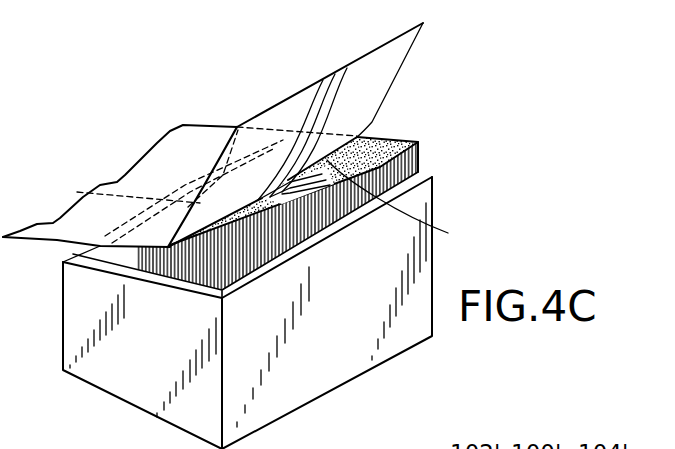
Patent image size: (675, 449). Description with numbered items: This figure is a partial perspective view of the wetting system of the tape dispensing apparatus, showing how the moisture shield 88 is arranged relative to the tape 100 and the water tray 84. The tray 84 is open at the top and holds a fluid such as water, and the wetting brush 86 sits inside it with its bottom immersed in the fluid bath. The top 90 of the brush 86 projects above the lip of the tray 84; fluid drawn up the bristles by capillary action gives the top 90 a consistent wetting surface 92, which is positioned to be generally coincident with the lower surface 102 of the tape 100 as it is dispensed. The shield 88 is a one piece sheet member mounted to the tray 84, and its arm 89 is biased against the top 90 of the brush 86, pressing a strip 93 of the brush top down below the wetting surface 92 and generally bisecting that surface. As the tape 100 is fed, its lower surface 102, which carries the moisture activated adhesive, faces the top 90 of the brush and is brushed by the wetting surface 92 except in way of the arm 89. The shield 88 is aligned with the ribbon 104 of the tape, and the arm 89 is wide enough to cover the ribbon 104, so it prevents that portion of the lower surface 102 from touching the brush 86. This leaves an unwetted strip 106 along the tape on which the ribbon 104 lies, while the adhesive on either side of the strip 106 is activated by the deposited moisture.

The tray 84 is at (417, 336).
The wetting brush 86 is at (418, 158).
The moisture shield 88 is at (77, 192).
The arm 89 is at (318, 232).
The top of the brush 90 is at (425, 197).
The wetting surface 92 is at (386, 137).
The strip 93 is at (402, 207).
The tape 100 is at (195, 134).
The lower surface 102 is at (397, 62).
The ribbon 104 is at (328, 77).
The strip 106 is at (343, 70).